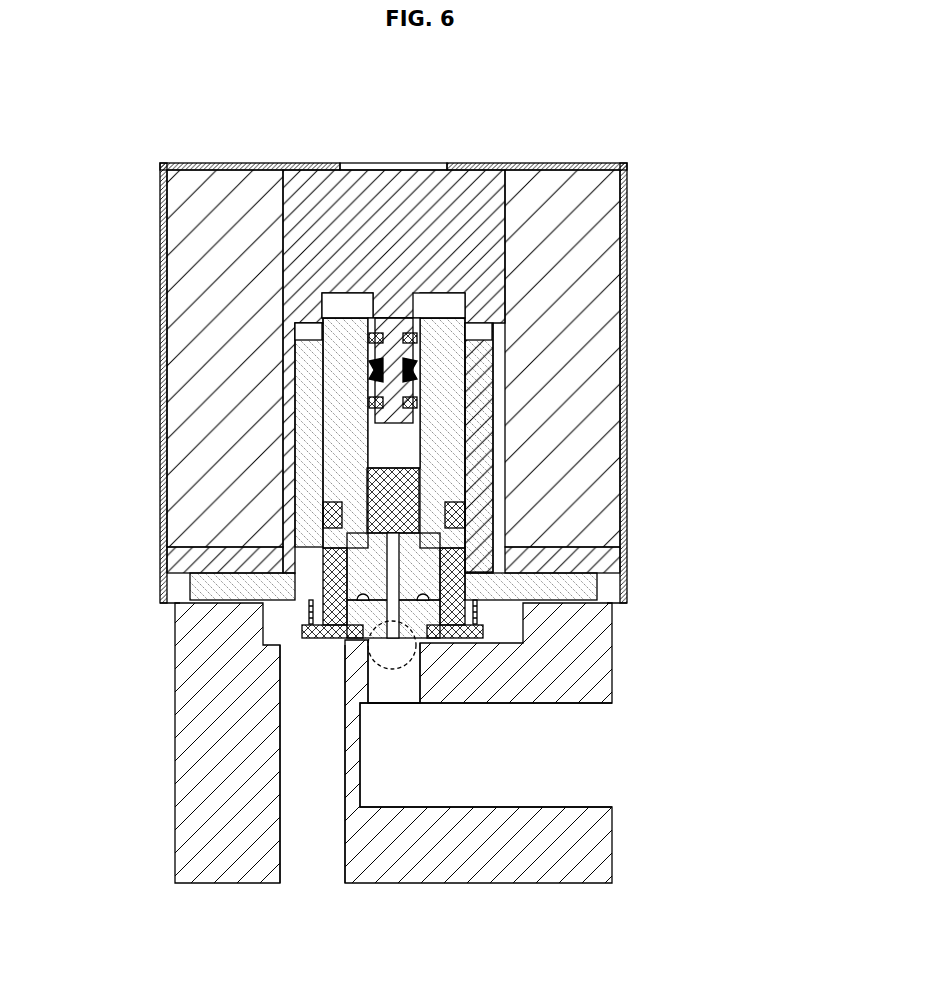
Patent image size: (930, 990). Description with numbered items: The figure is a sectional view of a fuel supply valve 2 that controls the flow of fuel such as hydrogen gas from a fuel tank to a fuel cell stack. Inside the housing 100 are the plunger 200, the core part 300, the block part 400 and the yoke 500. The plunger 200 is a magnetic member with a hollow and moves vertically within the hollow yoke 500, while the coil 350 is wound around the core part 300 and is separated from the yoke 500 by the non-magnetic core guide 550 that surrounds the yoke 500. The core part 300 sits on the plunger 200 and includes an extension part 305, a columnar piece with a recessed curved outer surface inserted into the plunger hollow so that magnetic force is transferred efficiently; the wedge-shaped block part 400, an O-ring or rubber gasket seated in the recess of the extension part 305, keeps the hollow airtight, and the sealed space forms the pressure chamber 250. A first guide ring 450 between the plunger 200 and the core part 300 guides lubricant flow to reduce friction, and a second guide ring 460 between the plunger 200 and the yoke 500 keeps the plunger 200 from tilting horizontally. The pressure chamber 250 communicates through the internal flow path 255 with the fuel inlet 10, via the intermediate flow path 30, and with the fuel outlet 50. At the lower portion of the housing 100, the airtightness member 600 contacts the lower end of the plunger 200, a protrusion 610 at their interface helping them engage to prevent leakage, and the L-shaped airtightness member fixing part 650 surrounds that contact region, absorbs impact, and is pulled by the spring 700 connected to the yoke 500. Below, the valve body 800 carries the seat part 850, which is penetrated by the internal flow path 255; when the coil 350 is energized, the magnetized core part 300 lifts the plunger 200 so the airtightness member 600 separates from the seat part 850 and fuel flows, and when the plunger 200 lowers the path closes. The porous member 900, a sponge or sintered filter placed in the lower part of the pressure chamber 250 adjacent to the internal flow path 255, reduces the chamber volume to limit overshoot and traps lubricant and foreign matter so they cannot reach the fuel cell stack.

The fuel supply valve 2 is at (641, 123).
The fuel inlet 10 is at (583, 790).
The intermediate flow path 30 is at (390, 693).
The fuel outlet 50 is at (325, 865).
The housing 100 is at (627, 285).
The plunger 200 is at (440, 407).
The pressure chamber 250 is at (397, 445).
The internal flow path 255 is at (323, 575).
The core part 300 is at (375, 190).
The extension part 305 is at (398, 353).
The coil 350 is at (602, 208).
The block part 400 is at (370, 362).
The first guide ring 450 is at (370, 333).
The second guide ring 460 is at (323, 512).
The yoke 500 is at (585, 583).
The core guide 550 is at (608, 562).
The airtightness member 600 is at (463, 608).
The protrusion 610 is at (310, 640).
The airtightness member fixing part 650 is at (437, 633).
The spring 700 is at (478, 612).
The valve body 800 is at (280, 617).
The seat part 850 is at (365, 640).
The porous member 900 is at (397, 502).